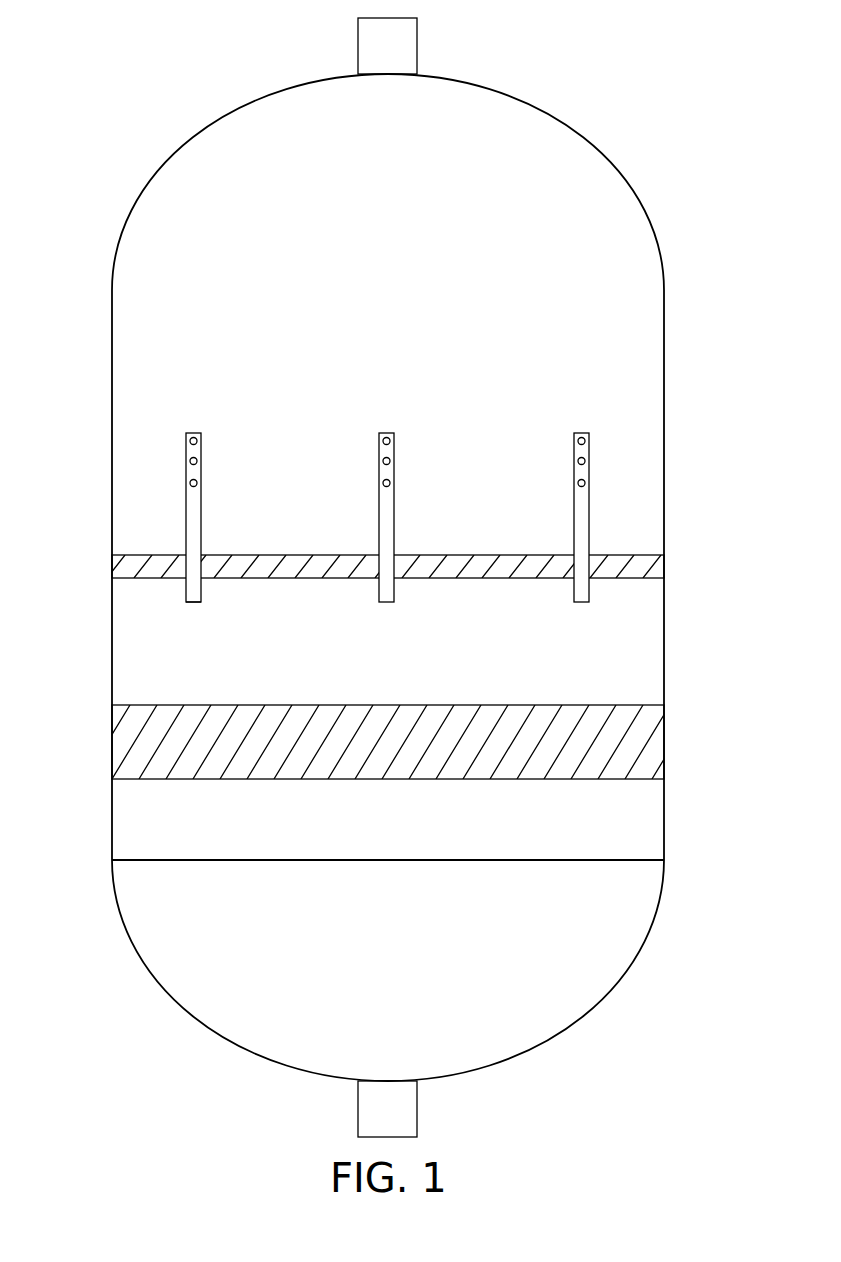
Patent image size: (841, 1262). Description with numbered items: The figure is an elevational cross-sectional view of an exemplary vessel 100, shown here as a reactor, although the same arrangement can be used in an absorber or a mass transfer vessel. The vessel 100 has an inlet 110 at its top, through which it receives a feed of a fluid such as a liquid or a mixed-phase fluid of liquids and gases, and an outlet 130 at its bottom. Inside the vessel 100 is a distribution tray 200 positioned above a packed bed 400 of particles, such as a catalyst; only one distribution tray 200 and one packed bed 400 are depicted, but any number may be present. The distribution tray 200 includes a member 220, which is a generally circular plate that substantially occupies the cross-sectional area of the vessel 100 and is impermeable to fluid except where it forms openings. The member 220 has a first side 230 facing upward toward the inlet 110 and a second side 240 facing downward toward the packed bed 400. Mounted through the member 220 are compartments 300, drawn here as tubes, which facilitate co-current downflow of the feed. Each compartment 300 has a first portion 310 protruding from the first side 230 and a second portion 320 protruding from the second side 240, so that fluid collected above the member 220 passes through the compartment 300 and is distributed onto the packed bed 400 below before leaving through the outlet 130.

The vessel 100 is at (398, 577).
The inlet 110 is at (417, 44).
The outlet 130 is at (417, 1106).
The distribution tray 200 is at (384, 533).
The member 220 is at (652, 568).
The first side 230 is at (315, 483).
The second side 240 is at (350, 642).
The compartment 300 is at (163, 497).
The first portion 310 is at (201, 440).
The second portion 320 is at (201, 594).
The packed bed 400 is at (650, 742).